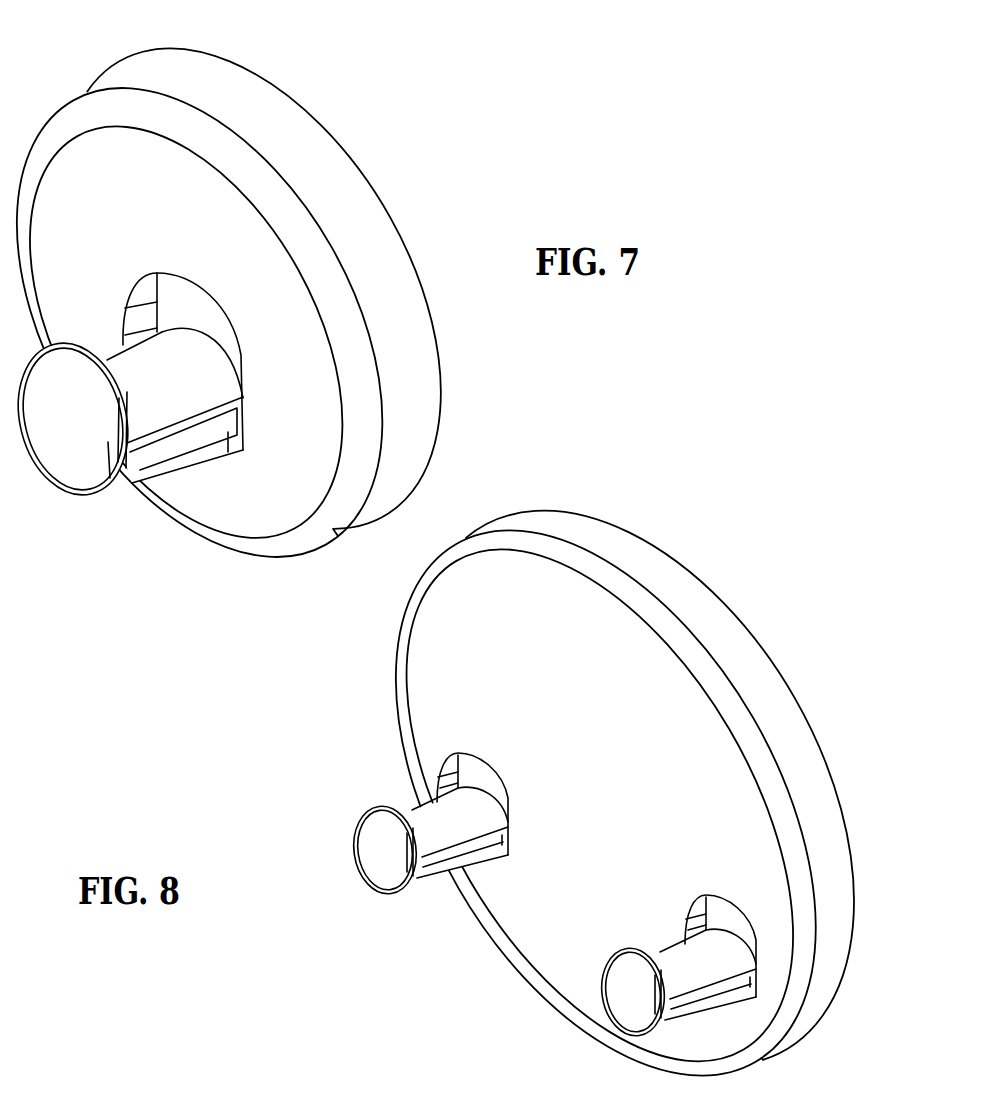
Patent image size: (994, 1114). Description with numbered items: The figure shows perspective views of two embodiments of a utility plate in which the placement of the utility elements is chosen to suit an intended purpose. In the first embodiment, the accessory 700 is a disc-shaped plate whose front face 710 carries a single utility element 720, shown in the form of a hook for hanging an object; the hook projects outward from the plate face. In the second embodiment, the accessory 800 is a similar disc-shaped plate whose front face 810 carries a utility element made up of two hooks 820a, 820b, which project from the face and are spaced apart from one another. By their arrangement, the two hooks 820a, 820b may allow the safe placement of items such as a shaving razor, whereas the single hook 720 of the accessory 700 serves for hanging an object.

In FIG. 7, the accessory 700 is at (229, 322).
In FIG. 7, the front face of disc 710 is at (203, 332).
In FIG. 7, the utility element 720 is at (123, 390).
In FIG. 8, the accessory 800 is at (606, 786).
In FIG. 8, the front face of disc 810 is at (600, 799).
In FIG. 8, the utility element 820a is at (375, 845).
In FIG. 8, the utility element 820b is at (629, 989).